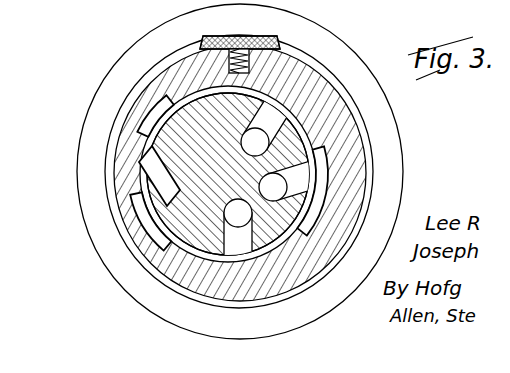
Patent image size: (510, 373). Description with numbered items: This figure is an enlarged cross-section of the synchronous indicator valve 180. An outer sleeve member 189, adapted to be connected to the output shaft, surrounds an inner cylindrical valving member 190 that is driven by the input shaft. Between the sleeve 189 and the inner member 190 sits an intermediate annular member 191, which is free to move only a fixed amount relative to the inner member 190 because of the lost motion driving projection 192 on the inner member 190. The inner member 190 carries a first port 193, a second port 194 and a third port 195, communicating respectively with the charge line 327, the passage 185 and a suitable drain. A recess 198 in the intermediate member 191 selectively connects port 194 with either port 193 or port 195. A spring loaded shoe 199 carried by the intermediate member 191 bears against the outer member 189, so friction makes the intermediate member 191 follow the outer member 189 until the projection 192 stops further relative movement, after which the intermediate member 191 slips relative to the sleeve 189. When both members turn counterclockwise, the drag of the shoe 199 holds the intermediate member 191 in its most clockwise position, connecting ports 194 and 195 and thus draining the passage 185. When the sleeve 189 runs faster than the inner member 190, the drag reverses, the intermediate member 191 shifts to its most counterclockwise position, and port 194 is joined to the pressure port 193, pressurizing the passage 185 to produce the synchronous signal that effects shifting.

The synchronous indicator valve 180 is at (96, 283).
The outer sleeve member 189 is at (88, 103).
The intermediate annular member 191 is at (118, 165).
The lost motion driving projection 192 is at (133, 128).
The inner cylindrical valving member 190 is at (170, 200).
The recess 198 is at (326, 163).
The spring loaded shoe 199 is at (218, 37).
The charge line 327 is at (241, 144).
The passage 185 is at (262, 177).
The first port 193 is at (275, 117).
The second port 194 is at (285, 200).
The third port 195 is at (233, 242).